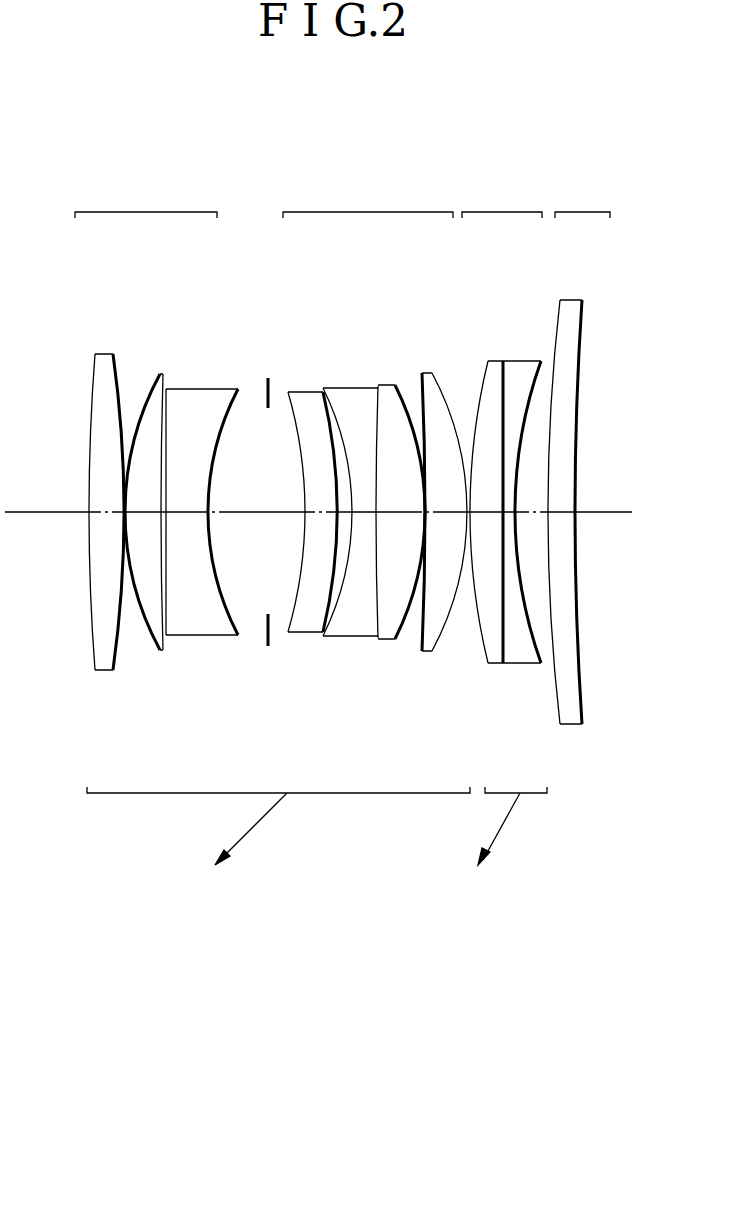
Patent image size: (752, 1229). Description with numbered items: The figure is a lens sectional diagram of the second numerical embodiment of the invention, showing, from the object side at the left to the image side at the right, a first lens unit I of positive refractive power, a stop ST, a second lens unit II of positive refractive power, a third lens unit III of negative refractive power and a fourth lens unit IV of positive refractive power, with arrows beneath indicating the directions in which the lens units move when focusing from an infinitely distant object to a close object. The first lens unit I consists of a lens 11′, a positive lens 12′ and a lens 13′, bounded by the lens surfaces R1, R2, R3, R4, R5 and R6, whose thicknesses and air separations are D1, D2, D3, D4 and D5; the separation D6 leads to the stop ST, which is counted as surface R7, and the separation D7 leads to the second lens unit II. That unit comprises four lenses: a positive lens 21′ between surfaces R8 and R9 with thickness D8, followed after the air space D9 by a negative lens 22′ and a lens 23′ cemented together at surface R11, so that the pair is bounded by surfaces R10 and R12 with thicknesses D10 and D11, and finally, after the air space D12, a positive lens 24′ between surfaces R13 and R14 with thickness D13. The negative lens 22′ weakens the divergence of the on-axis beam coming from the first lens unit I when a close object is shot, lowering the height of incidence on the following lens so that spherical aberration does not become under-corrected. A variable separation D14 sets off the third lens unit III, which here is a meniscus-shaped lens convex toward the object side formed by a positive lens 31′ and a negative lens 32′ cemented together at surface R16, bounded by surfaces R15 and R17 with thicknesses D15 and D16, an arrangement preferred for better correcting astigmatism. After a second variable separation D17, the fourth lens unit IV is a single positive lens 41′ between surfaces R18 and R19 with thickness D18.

The first lens unit I is at (146, 199).
The second lens unit II is at (368, 199).
The third lens unit III is at (502, 199).
The fourth lens unit IV is at (582, 199).
The lens 11′ is at (107, 417).
The positive lens 12′ is at (152, 452).
The lens 13′ is at (192, 483).
The positive lens 21′ is at (312, 430).
The negative lens 22′ is at (363, 455).
The lens 23′ is at (403, 477).
The positive lens 24′ is at (438, 418).
The positive lens 31′ is at (485, 442).
The negative lens 32′ is at (508, 470).
The positive lens 41′ is at (552, 497).
The stop ST is at (250, 435).
The first lens surface R1 is at (95, 358).
The second lens surface R2 is at (120, 365).
The third lens surface R3 is at (150, 402).
The fourth lens surface R4 is at (163, 378).
The fifth lens surface R5 is at (170, 396).
The sixth lens surface R6 is at (228, 415).
The seventh surface R7 is at (267, 394).
The eighth lens surface R8 is at (288, 392).
The ninth lens surface R9 is at (323, 417).
The tenth lens surface R10 is at (325, 418).
The eleventh lens surface R11 is at (377, 387).
The twelfth lens surface R12 is at (397, 386).
The thirteenth lens surface R13 is at (422, 374).
The fourteenth lens surface R14 is at (440, 387).
The fifteenth lens surface R15 is at (488, 362).
The sixteenth lens surface R16 is at (503, 361).
The seventeenth lens surface R17 is at (526, 385).
The eighteenth lens surface R18 is at (556, 318).
The nineteenth lens surface R19 is at (583, 328).
The first lens thickness D1 is at (95, 668).
The second air separation D2 is at (125, 650).
The third lens thickness D3 is at (152, 645).
The fourth air separation D4 is at (176, 640).
The fifth lens thickness D5 is at (208, 636).
The sixth air separation D6 is at (252, 640).
The seventh air separation D7 is at (278, 640).
The eighth lens thickness D8 is at (305, 636).
The ninth air separation D9 is at (347, 636).
The tenth lens thickness D10 is at (366, 636).
The eleventh lens thickness D11 is at (383, 638).
The twelfth air separation D12 is at (408, 640).
The thirteenth lens thickness D13 is at (430, 650).
The fourteenth air separation D14 is at (465, 640).
The fifteenth lens thickness D15 is at (495, 664).
The sixteenth lens thickness D16 is at (522, 664).
The seventeenth air separation D17 is at (541, 630).
The eighteenth lens thickness D18 is at (583, 710).